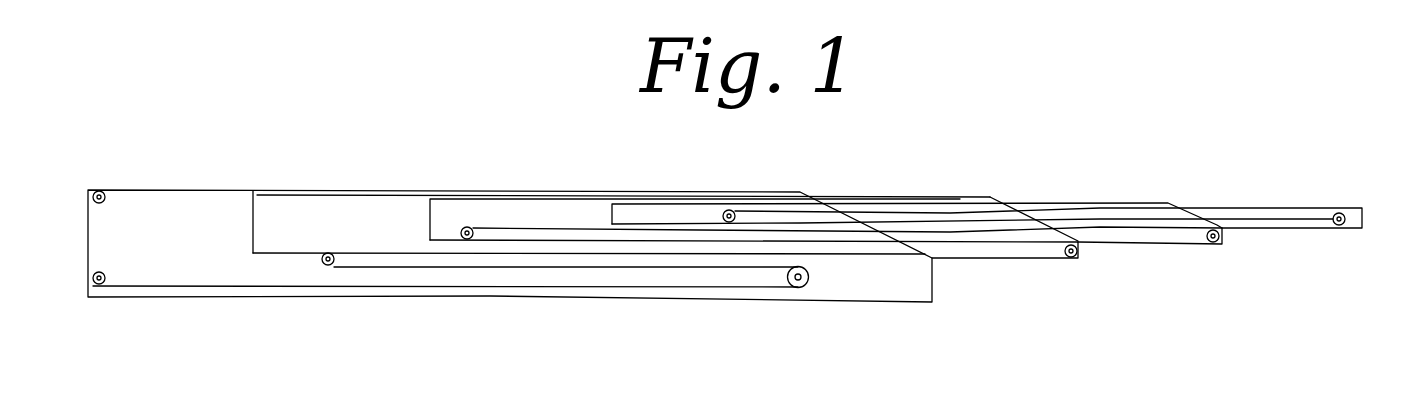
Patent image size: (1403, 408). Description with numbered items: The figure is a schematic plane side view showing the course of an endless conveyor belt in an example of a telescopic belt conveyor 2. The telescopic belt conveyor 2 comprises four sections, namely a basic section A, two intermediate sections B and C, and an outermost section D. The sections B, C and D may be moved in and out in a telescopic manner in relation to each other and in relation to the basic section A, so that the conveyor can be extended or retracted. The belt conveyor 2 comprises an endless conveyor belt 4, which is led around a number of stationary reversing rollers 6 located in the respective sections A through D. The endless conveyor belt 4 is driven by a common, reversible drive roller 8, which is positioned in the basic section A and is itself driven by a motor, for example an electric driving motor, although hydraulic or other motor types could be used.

The telescopic belt conveyor 2 is at (218, 184).
The endless conveyor belt 4 is at (393, 191).
The stationary reversing rollers 6 is at (101, 191).
The reversible drive roller 8 is at (797, 289).
The basic section A is at (862, 282).
The intermediate section B is at (980, 248).
The intermediate section C is at (1117, 235).
The outermost section D is at (1264, 218).